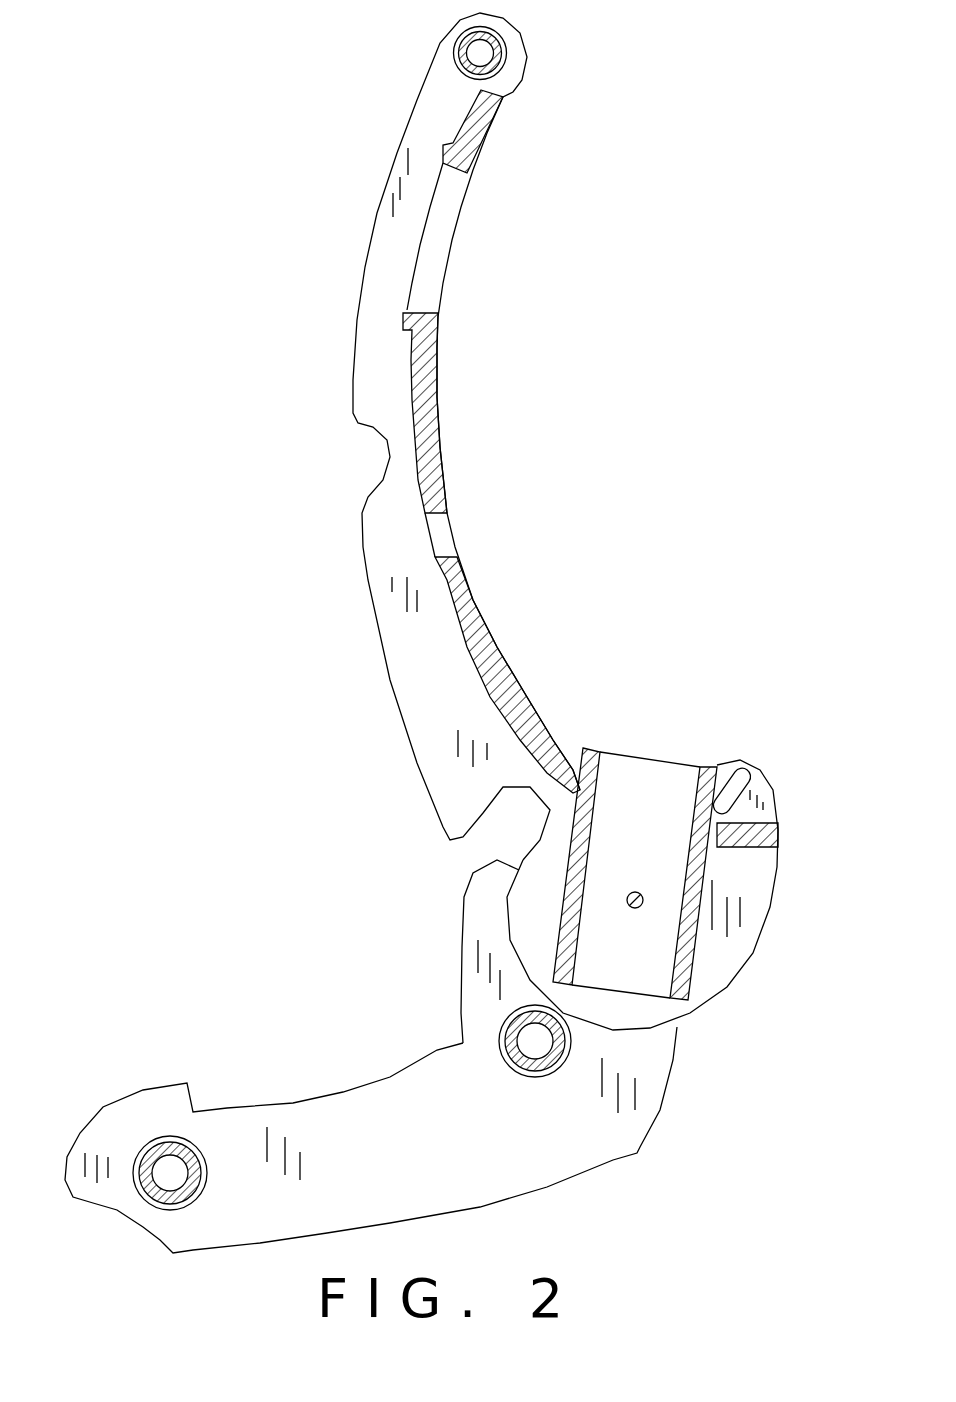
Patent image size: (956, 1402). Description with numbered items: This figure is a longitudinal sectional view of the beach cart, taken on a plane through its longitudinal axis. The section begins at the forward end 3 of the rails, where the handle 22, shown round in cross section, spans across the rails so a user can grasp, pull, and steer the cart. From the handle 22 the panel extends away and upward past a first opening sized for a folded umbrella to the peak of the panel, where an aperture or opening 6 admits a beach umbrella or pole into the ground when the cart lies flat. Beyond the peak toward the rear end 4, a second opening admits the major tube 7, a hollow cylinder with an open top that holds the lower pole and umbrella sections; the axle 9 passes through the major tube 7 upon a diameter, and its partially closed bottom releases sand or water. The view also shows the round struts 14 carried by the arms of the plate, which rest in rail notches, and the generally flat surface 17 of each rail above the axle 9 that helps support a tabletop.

The forward end 3 is at (412, 107).
The handle 22 is at (505, 45).
The aperture or opening 6 is at (435, 265).
The major tube 7 is at (700, 767).
The axle 9 is at (627, 899).
The rear end 4 is at (734, 1027).
The struts 14 is at (168, 1140).
The flat surface 17 is at (490, 1203).